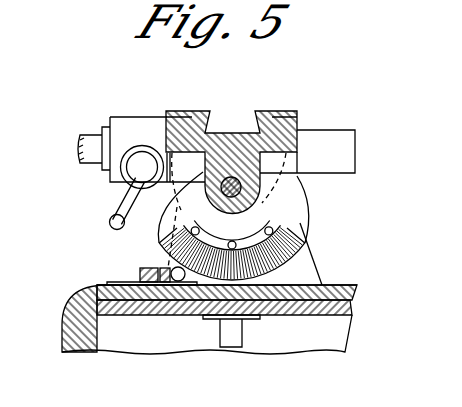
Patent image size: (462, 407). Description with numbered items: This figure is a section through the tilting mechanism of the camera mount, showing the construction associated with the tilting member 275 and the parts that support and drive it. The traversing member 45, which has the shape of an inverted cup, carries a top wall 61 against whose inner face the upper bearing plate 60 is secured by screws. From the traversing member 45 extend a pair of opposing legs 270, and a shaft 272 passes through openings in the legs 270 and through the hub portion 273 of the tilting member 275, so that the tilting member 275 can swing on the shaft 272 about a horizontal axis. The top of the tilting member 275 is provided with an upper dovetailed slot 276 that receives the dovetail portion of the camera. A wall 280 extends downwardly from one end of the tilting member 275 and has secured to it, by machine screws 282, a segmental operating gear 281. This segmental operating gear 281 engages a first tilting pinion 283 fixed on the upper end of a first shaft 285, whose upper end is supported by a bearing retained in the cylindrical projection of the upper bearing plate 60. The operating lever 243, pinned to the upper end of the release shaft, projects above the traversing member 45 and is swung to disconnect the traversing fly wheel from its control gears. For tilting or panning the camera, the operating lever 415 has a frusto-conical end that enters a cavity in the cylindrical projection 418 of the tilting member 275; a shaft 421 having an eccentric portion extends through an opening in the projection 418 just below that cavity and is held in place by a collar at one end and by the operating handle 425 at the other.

The traversing member 45 is at (55, 331).
The upper bearing plate 60 is at (356, 304).
The top wall 61 is at (350, 287).
The operating lever 243 is at (163, 270).
The legs 270 is at (302, 272).
The shaft 272 is at (162, 197).
The hub portion 273 is at (283, 192).
The tilting member 275 is at (237, 115).
The upper dovetailed slot 276 is at (223, 111).
The wall 280 is at (287, 210).
The segmental operating gear 281 is at (297, 240).
The machine screws 282 is at (160, 240).
The first tilting pinion 283 is at (264, 284).
The first shaft 285 is at (238, 344).
The operating lever 415 is at (87, 138).
The cylindrical projection 418 is at (130, 128).
The shaft 421 is at (126, 178).
The operating handle 425 is at (137, 170).